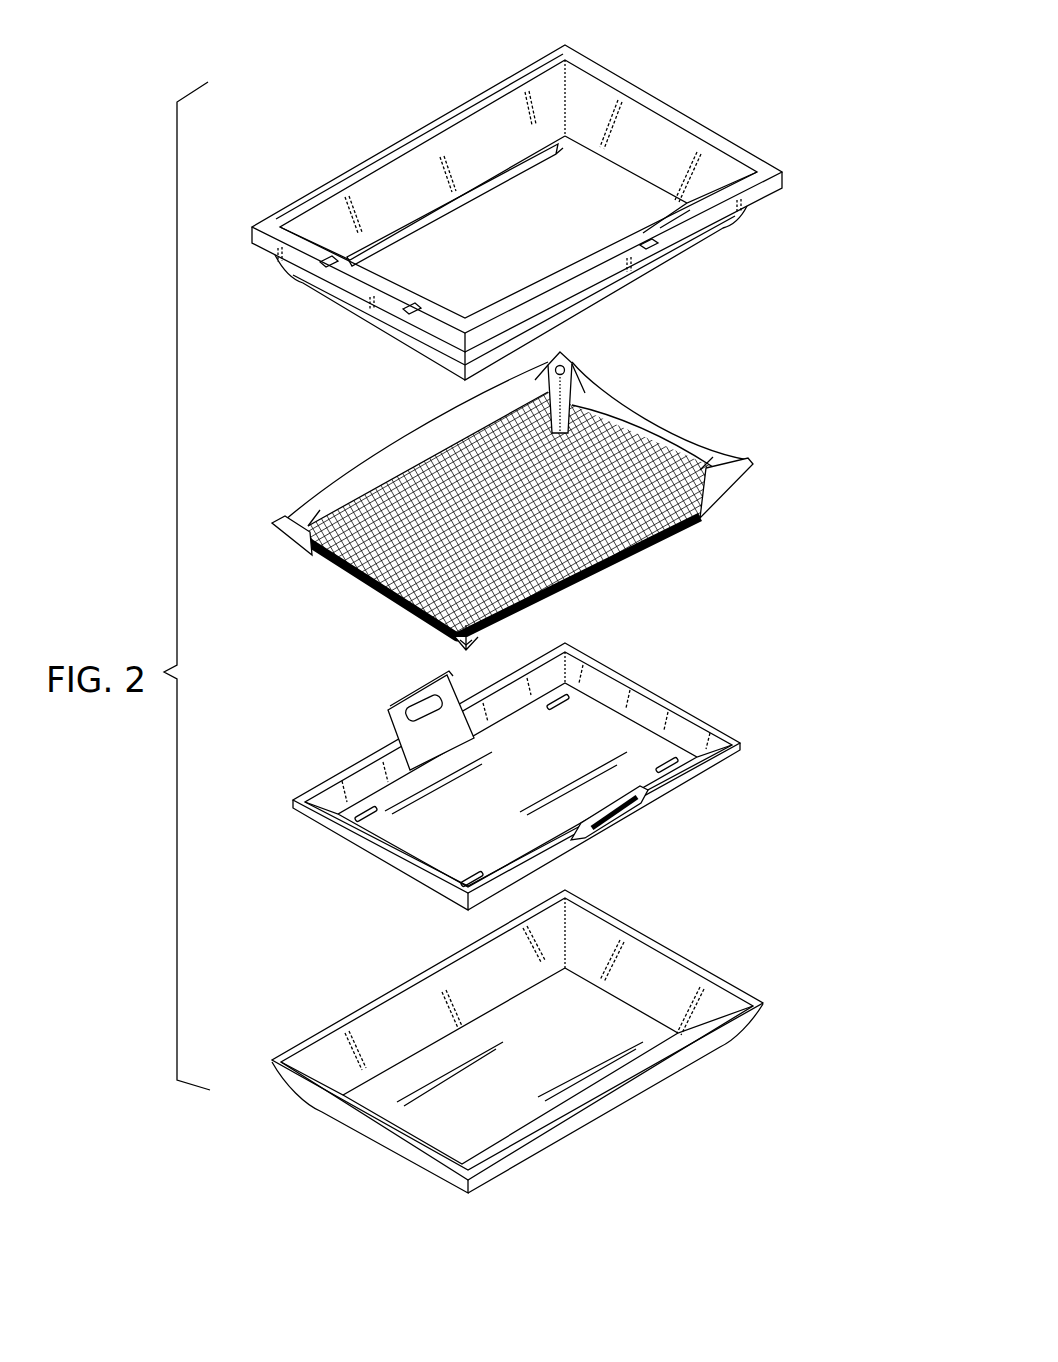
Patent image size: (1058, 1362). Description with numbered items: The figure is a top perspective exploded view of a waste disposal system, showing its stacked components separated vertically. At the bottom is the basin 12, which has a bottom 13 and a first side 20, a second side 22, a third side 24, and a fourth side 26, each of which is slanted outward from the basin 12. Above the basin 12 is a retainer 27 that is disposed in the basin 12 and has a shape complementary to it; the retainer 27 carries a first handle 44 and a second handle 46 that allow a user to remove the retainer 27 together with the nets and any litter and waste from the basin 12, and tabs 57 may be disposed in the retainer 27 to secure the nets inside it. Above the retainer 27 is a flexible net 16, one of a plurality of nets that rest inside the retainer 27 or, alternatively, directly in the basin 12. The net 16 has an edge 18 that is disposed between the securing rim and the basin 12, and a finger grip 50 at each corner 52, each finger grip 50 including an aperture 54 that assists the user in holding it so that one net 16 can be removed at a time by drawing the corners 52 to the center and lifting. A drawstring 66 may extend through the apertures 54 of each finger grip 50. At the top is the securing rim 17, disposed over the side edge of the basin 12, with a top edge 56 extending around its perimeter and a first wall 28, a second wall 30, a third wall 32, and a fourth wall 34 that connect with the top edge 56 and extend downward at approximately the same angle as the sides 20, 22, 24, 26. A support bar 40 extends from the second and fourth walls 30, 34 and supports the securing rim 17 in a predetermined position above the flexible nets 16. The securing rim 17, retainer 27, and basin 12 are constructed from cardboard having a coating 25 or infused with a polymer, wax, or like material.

The basin 12 is at (516, 1041).
The bottom 13 is at (517, 1065).
The flexible net 16 is at (518, 495).
The securing rim 17 is at (712, 137).
The edge of net 18 is at (380, 478).
The first side 20 is at (352, 1118).
The second side 22 is at (422, 993).
The third side 24 is at (643, 970).
The coating 25 is at (351, 197).
The fourth side 26 is at (637, 1093).
The retainer 27 is at (535, 772).
The first wall 28 is at (360, 315).
The second wall 30 is at (403, 168).
The third wall 32 is at (633, 112).
The fourth wall 34 is at (670, 260).
The support bar 40 is at (480, 197).
The first handle 44 is at (395, 705).
The second handle 46 is at (637, 805).
The finger grip 50 is at (573, 385).
The corner 52 is at (585, 393).
The aperture 54 is at (563, 362).
The top edge 56 is at (590, 68).
The tab 57 is at (657, 770).
The drawstring 66 is at (447, 418).